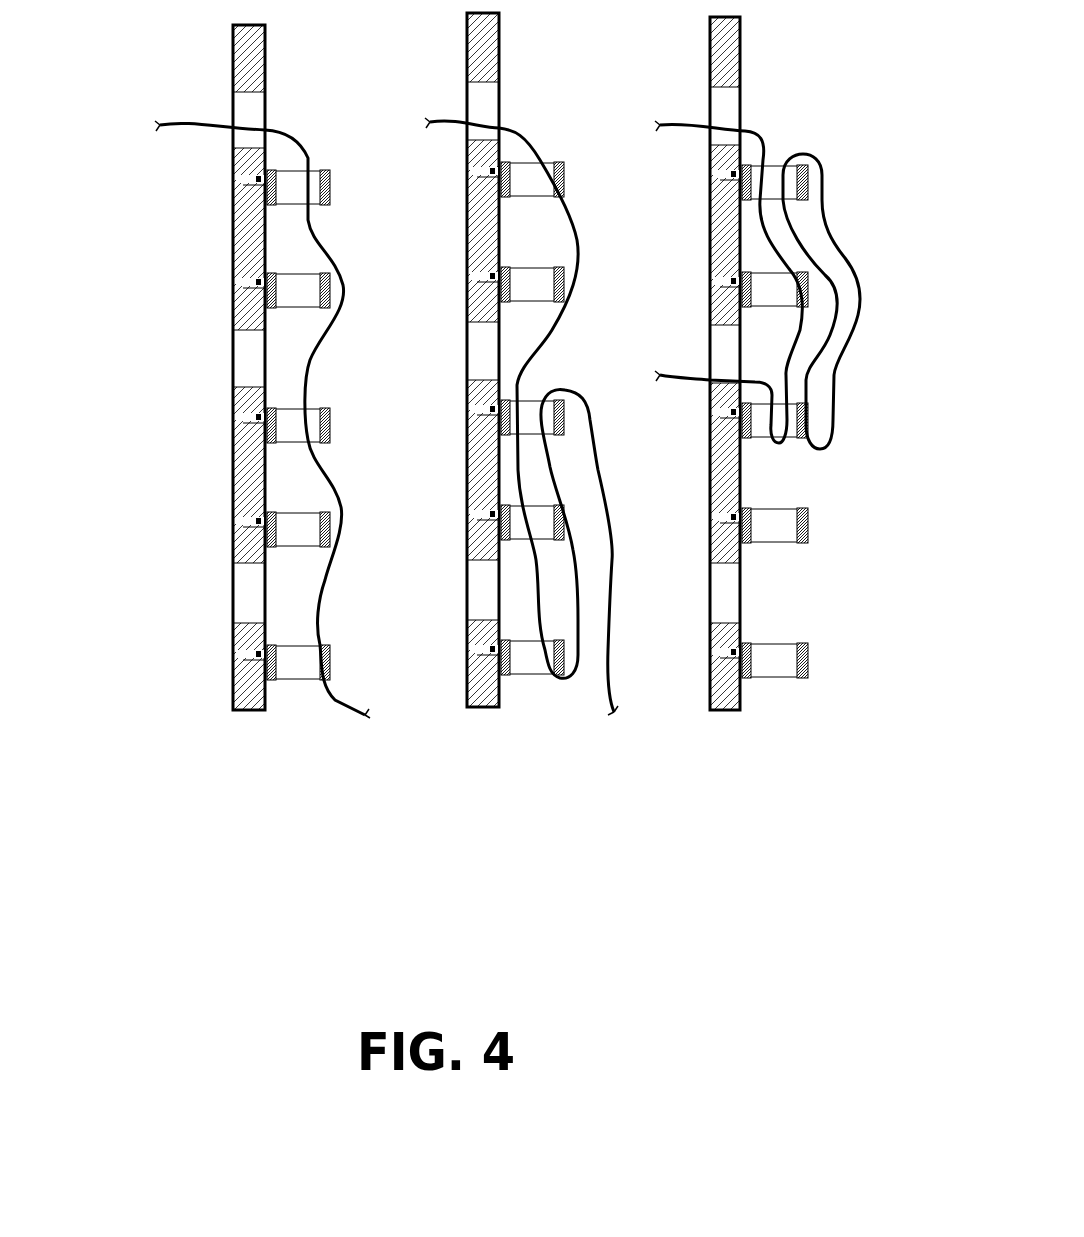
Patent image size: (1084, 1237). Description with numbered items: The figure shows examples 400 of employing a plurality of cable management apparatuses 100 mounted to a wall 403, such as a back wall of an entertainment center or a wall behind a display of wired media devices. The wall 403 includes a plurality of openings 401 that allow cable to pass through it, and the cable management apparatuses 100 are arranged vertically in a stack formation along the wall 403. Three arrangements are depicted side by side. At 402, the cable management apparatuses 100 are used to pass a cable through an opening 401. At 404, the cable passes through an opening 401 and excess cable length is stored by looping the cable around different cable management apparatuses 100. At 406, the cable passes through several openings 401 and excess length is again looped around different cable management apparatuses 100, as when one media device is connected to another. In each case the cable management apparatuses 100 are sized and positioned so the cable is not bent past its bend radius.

The cable management apparatus 100 is at (330, 186).
The examples 400 is at (505, 487).
The opening 401 is at (233, 125).
The example of passing a cable through an opening 402 is at (252, 800).
The wall 403 is at (241, 52).
The example of passing a cable through an opening and storing excess cable 404 is at (488, 800).
The example of passing a cable through several openings and storing excess cable 406 is at (733, 800).